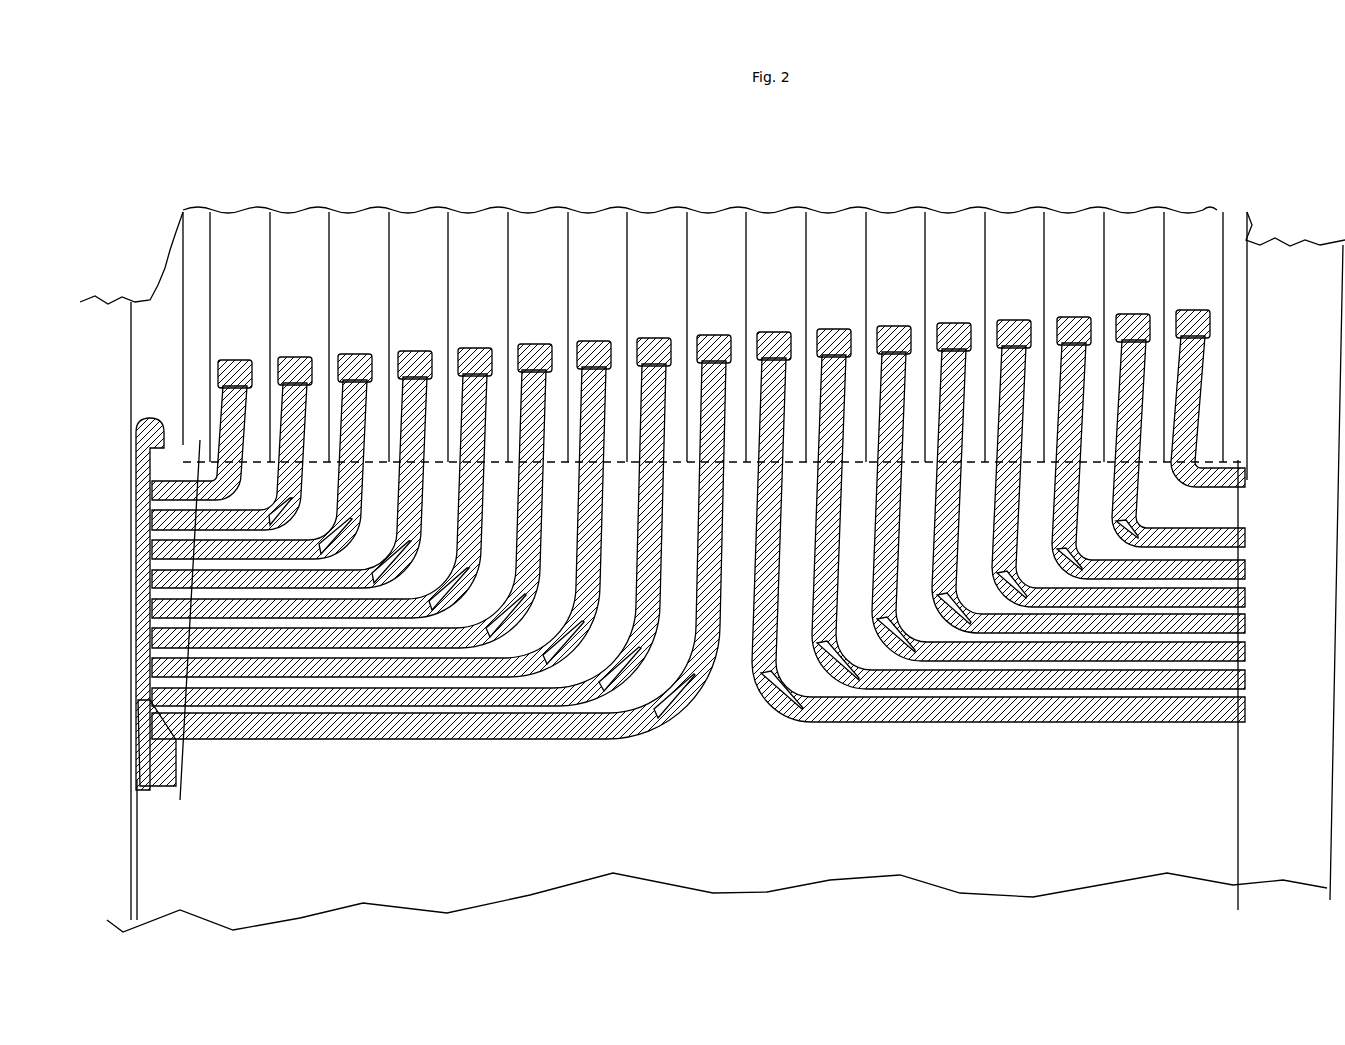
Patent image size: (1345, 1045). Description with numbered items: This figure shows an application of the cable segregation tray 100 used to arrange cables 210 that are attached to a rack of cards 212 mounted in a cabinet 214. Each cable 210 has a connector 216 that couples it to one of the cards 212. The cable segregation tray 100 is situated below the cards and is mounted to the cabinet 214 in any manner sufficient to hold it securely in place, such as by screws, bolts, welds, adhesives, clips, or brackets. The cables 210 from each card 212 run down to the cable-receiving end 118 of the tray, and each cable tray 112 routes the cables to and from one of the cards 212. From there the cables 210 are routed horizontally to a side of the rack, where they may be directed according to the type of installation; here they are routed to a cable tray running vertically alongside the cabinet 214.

The cable segregation tray 100 is at (734, 677).
The cable tray 112 is at (222, 522).
The cable-receiving end 118 is at (294, 510).
The cable 210 is at (244, 440).
The card 212 is at (244, 218).
The cabinet 214 is at (95, 302).
The connector 216 is at (233, 366).